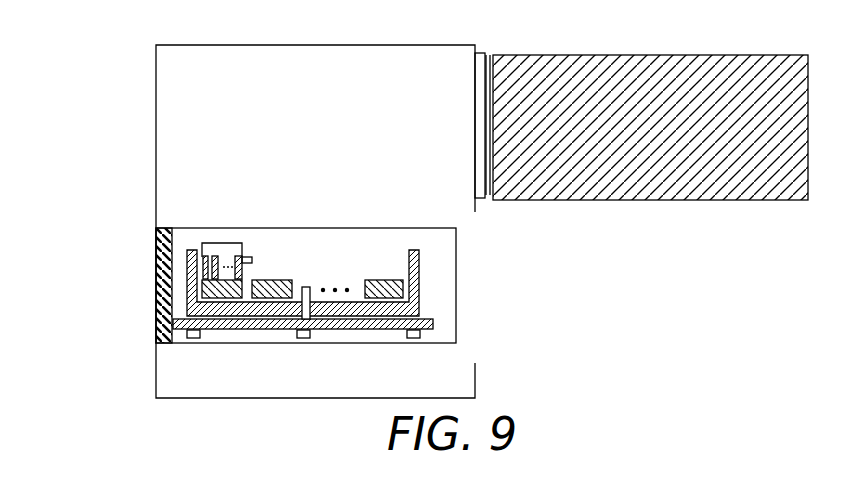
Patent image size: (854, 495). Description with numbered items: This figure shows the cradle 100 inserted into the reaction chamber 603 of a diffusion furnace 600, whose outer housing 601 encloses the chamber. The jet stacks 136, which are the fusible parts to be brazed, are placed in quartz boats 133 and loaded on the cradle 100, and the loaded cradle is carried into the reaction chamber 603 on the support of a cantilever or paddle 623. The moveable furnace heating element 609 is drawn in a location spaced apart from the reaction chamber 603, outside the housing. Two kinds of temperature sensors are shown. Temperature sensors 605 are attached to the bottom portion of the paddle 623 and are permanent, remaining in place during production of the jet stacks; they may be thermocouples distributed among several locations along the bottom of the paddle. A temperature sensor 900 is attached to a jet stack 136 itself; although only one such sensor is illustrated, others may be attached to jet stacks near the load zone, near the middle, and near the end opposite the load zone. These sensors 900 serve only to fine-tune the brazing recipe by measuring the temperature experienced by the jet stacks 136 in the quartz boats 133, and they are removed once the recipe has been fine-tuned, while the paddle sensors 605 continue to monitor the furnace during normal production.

The diffusion furnace 600 is at (108, 70).
The housing 601 is at (316, 45).
The moveable furnace heating element 609 is at (652, 55).
The reaction chamber 603 is at (378, 228).
The paddle 623 is at (181, 319).
The cradle 100 is at (432, 285).
The temperature sensors 605 is at (412, 338).
The quartz boats 133 is at (393, 280).
The jet stacks 136 is at (220, 243).
The temperature sensors 900 is at (252, 260).